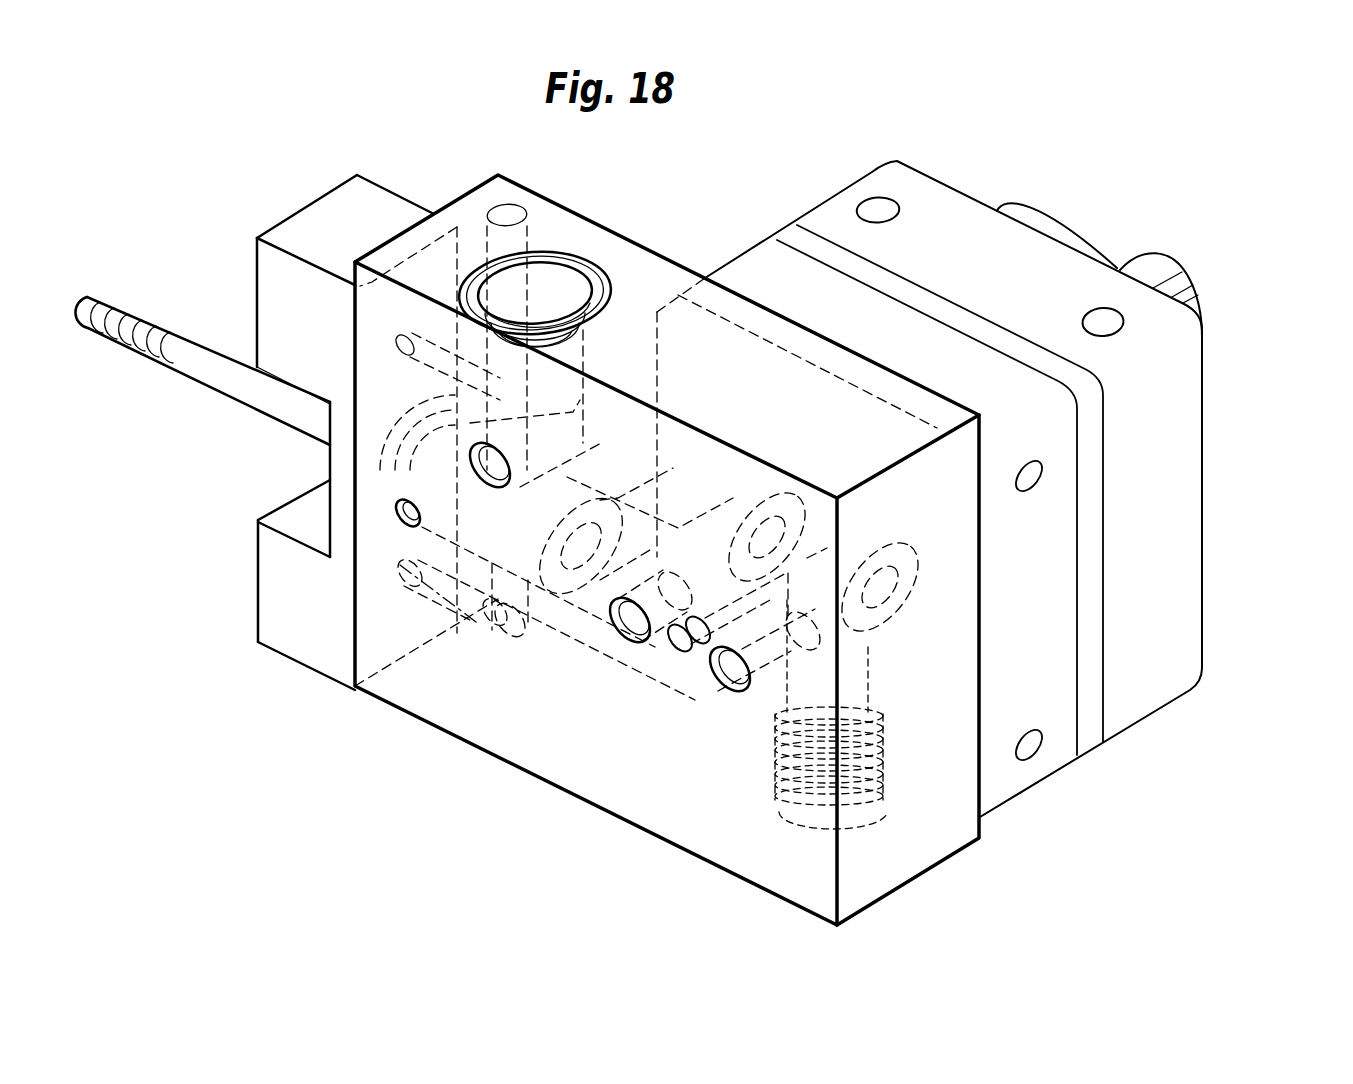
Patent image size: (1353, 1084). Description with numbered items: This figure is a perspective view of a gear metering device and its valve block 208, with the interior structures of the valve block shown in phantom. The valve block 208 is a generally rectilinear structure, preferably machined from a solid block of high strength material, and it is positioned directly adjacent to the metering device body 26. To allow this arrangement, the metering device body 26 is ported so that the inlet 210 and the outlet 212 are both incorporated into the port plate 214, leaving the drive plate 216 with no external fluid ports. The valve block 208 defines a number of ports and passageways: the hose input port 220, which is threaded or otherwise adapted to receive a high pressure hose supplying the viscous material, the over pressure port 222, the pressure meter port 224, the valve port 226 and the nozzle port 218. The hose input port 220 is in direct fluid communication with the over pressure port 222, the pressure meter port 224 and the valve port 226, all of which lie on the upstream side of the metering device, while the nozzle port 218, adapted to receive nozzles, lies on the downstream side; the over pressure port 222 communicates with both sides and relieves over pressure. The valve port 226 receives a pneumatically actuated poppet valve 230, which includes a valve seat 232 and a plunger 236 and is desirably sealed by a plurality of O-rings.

The metering device body 26 is at (846, 188).
The valve block 208 is at (605, 228).
The inlet 210 is at (805, 525).
The outlet 212 is at (878, 605).
The port plate 214 is at (1058, 770).
The drive plate 216 is at (1177, 700).
The nozzle port 218 is at (778, 828).
The hose input port 220 is at (565, 277).
The over pressure port 222 is at (615, 642).
The pressure meter port 224 is at (468, 464).
The valve port 226 is at (358, 455).
The poppet valve 230 is at (545, 590).
The valve seat 232 is at (583, 480).
The plunger 236 is at (205, 340).